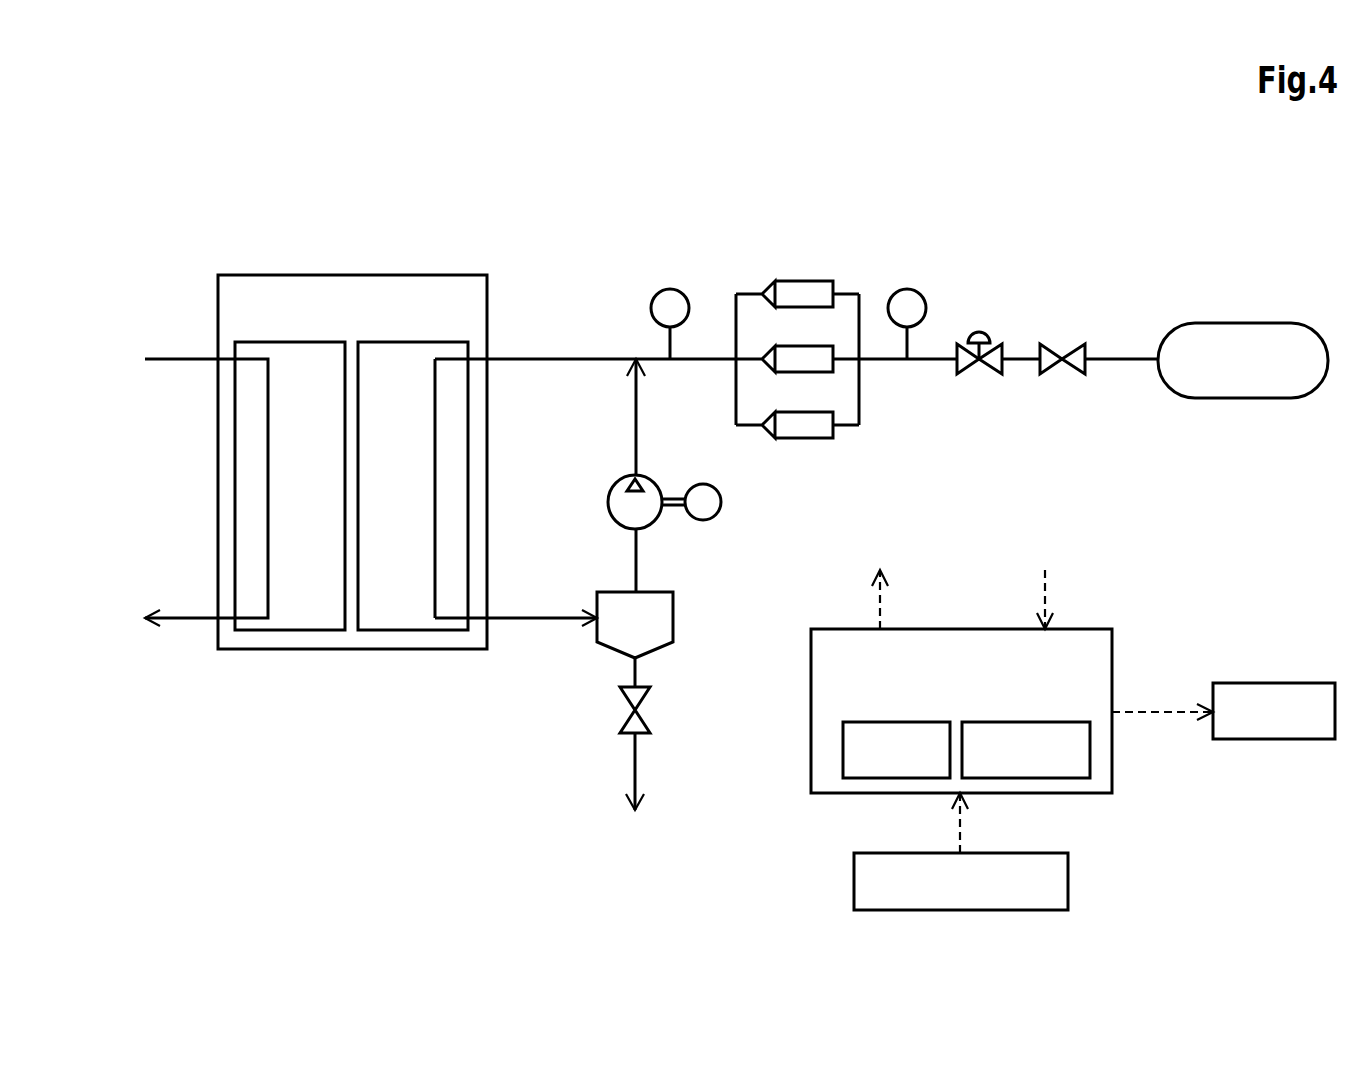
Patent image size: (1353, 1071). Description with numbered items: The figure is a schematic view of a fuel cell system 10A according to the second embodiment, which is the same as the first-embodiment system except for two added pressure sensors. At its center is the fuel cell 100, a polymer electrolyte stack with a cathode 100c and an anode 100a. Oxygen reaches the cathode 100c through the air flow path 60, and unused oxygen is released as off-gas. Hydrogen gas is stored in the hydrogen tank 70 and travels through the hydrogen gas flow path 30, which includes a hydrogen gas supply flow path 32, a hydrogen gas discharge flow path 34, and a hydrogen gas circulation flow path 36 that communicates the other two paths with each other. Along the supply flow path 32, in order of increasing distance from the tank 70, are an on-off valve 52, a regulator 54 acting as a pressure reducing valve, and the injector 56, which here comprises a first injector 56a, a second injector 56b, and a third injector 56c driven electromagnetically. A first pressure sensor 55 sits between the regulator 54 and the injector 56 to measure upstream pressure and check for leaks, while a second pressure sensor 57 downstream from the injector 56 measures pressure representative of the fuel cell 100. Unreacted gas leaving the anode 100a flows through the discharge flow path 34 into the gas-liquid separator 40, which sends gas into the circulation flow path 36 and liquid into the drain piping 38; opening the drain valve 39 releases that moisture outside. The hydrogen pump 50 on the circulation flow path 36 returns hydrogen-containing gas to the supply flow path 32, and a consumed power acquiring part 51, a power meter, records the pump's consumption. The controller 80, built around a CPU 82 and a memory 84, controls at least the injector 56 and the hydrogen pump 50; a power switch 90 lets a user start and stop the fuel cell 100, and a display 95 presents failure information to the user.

The fuel cell system 10A is at (727, 152).
The fuel cell 100 is at (340, 273).
The cathode 100c is at (255, 341).
The anode 100a is at (445, 341).
The air flow path 60 is at (268, 488).
The hydrogen gas flow path 30 is at (490, 208).
The hydrogen gas supply flow path 32 is at (552, 358).
The hydrogen gas discharge flow path 34 is at (510, 615).
The hydrogen gas circulation flow path 36 is at (635, 440).
The second pressure sensor 57 is at (670, 288).
The injector 56 is at (915, 198).
The first injector 56a is at (788, 290).
The second injector 56b is at (812, 360).
The third injector 56c is at (825, 422).
The first pressure sensor 55 is at (908, 288).
The regulator 54 is at (977, 334).
The on-off valve 52 is at (1068, 342).
The hydrogen tank 70 is at (1235, 322).
The hydrogen pump 50 is at (648, 474).
The consumed power acquiring part 51 is at (710, 484).
The gas-liquid separator 40 is at (675, 615).
The drain valve 39 is at (643, 717).
The drain piping 38 is at (636, 768).
The controller 80 is at (1087, 628).
The CPU 82 is at (890, 721).
The memory 84 is at (1033, 721).
The power switch 90 is at (1020, 852).
The display 95 is at (1273, 682).